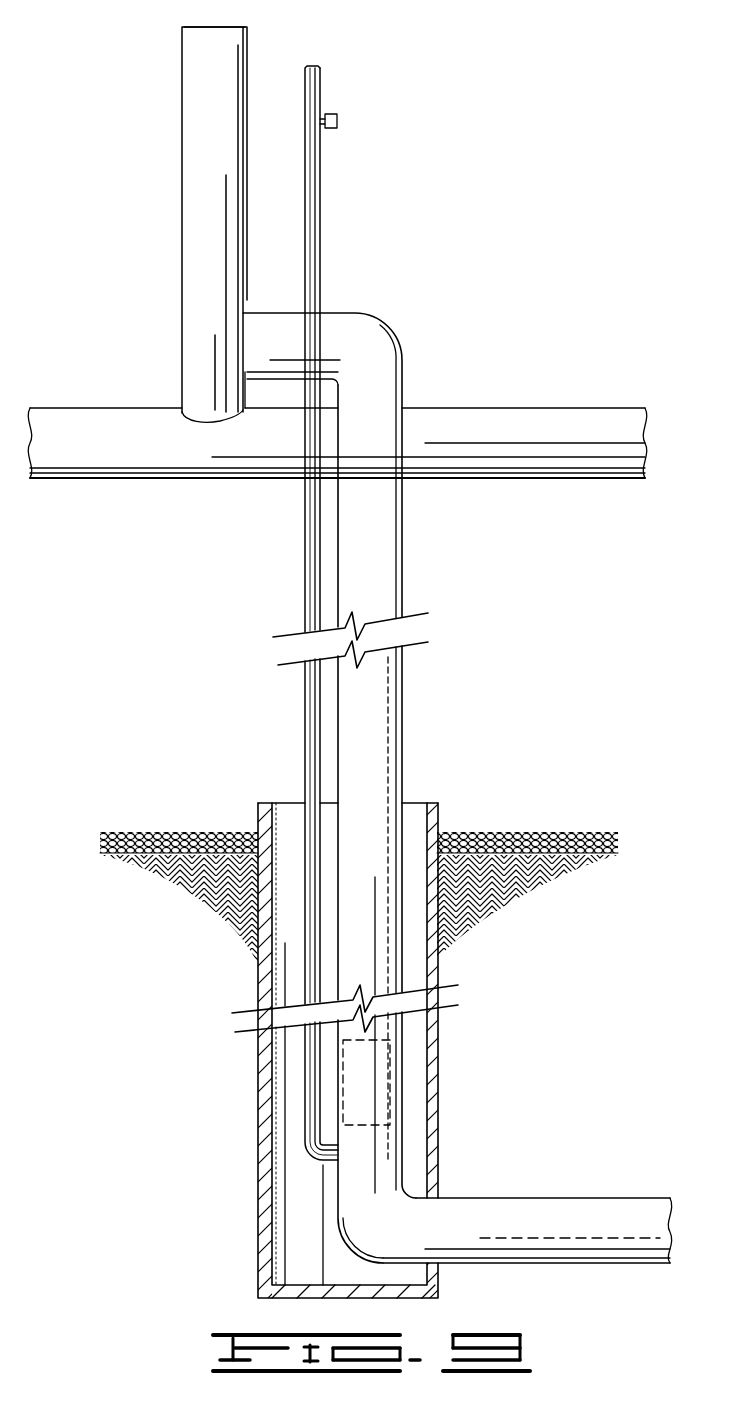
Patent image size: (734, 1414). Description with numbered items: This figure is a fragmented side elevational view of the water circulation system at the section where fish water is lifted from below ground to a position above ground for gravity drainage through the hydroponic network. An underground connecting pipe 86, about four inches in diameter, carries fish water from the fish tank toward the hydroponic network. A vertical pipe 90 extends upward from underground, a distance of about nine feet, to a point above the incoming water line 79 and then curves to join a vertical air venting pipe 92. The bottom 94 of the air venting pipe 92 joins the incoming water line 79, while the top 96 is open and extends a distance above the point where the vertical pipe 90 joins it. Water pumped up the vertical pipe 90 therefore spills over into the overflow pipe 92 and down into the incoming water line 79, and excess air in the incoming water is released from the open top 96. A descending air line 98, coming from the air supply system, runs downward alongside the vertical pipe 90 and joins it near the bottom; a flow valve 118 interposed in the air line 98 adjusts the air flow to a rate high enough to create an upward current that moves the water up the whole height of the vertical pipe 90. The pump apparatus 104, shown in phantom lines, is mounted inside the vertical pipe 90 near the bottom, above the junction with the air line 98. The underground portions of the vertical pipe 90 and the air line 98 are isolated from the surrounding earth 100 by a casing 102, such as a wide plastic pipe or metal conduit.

The incoming water line 79 is at (505, 420).
The connecting pipe 86 is at (520, 1197).
The vertical pipe 90 is at (405, 580).
The vertical air venting pipe 92 is at (182, 146).
The bottom of the vertical air venting pipe 94 is at (182, 395).
The top of the air venting pipe 96 is at (182, 40).
The descending air line 98 is at (320, 222).
The surrounding earth 100 is at (477, 885).
The casing 102 is at (262, 1113).
The pump apparatus 104 is at (367, 1113).
The flow valve 118 is at (337, 120).